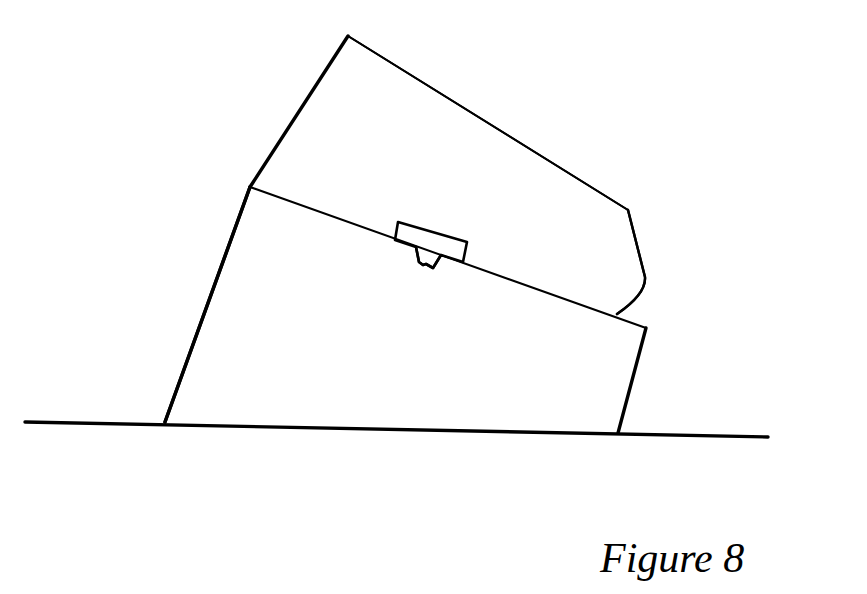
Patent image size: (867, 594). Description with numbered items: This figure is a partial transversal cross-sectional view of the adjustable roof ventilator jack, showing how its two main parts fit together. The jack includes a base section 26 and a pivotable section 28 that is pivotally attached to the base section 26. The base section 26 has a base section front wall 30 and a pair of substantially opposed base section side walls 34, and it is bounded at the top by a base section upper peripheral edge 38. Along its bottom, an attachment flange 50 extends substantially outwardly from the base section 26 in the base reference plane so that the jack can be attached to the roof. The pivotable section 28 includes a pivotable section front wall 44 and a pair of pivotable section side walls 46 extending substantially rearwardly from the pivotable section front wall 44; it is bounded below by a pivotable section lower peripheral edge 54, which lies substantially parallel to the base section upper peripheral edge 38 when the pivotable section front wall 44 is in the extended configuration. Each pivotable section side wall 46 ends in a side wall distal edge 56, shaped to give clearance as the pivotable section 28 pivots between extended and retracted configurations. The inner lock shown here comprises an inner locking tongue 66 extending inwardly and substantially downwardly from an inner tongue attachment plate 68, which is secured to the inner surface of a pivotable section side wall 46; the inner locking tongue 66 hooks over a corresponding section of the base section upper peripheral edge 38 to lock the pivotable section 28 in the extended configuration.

The base section 26 is at (132, 371).
The pivotable section 28 is at (214, 117).
The base section front wall 30 is at (194, 333).
The base section side walls 34 is at (600, 378).
The base section upper peripheral edge 38 is at (577, 297).
The pivotable section front wall 44 is at (322, 71).
The pivotable section side walls 46 is at (500, 172).
The attachment flange 50 is at (703, 434).
The pivotable section lower peripheral edge 54 is at (528, 286).
The side wall distal edge 56 is at (677, 306).
The inner locking tongue 66 is at (423, 265).
The inner tongue attachment plate 68 is at (415, 232).